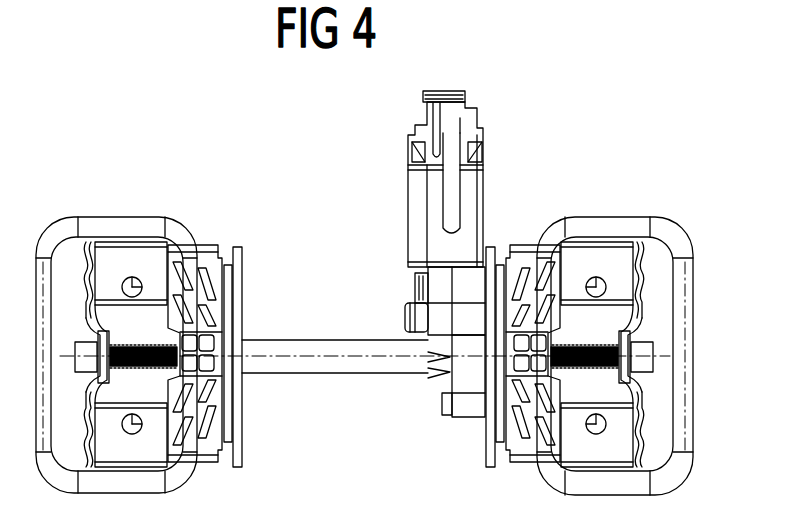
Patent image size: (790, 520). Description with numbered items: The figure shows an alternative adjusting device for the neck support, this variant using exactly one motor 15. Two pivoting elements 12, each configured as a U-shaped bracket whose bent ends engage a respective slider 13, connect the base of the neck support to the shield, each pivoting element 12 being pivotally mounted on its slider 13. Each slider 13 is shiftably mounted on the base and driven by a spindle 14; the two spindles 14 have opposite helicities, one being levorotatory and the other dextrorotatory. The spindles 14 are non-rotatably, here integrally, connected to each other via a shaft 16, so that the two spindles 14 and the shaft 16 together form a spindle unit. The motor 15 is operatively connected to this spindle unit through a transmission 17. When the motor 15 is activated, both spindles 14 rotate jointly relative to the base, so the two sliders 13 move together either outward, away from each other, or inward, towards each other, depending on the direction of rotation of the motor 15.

The pivoting element 12 is at (88, 227).
The slider 13 is at (215, 263).
The spindle 14 is at (153, 347).
The motor 15 is at (415, 222).
The shaft 16 is at (372, 362).
The transmission 17 is at (398, 296).